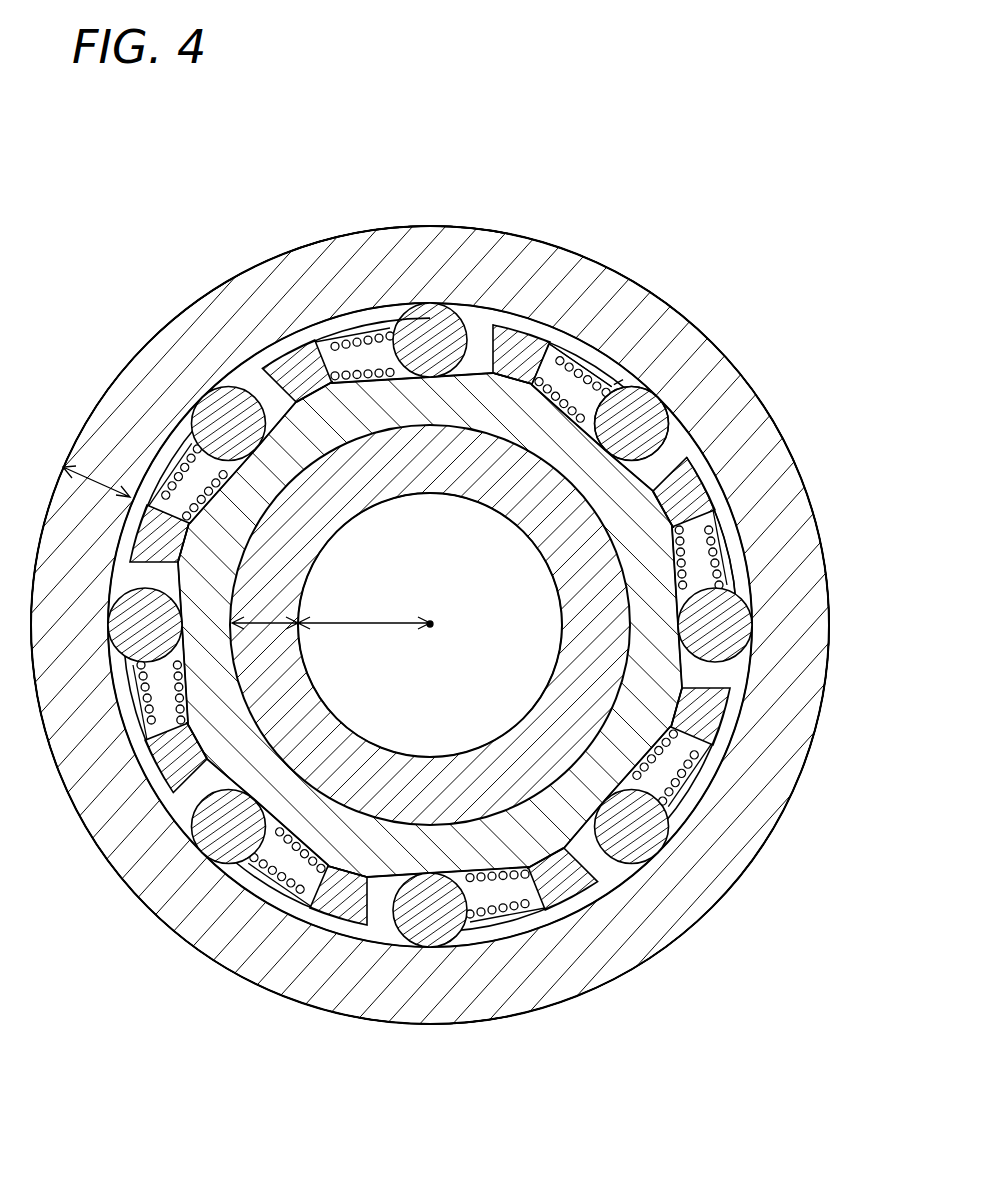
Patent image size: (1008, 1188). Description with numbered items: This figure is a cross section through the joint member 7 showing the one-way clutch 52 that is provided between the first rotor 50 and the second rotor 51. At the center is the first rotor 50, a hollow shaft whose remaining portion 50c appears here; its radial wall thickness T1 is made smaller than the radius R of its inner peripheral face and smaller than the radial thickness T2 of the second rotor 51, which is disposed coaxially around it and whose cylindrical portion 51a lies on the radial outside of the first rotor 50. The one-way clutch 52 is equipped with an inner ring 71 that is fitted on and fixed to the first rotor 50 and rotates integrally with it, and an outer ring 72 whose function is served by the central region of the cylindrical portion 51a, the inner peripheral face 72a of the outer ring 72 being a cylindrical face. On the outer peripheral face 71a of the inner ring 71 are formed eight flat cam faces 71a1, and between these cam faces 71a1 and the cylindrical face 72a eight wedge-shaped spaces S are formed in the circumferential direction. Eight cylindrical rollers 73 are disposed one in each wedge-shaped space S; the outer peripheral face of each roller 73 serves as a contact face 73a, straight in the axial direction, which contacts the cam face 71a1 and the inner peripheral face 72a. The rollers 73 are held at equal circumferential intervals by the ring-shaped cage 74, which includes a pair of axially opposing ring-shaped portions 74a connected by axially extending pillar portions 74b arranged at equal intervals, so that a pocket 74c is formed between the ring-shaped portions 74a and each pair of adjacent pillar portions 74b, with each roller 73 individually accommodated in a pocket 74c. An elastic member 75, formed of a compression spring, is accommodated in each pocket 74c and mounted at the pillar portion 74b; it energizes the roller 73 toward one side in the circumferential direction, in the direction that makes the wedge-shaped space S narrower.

The joint member 7 is at (781, 380).
The first rotor 50 is at (375, 712).
The remaining portion 50c is at (315, 523).
The second rotor 51 is at (331, 224).
The cylindrical portion 51a is at (785, 422).
The one-way clutch 52 is at (712, 484).
The inner ring 71 is at (591, 522).
The outer peripheral face 71a is at (598, 485).
The cam face 71a1 is at (513, 350).
The outer ring 72 is at (402, 218).
The inner peripheral face 72a is at (530, 328).
The roller 73 is at (638, 403).
The contact face 73a is at (685, 420).
The cage 74 is at (307, 327).
The ring-shaped portion 74a is at (727, 562).
The pillar portion 74b is at (498, 322).
The pocket 74c is at (725, 405).
The elastic member 75 is at (575, 353).
The wedge-shaped space S is at (619, 361).
The radius of the inner peripheral face R is at (364, 613).
The radial thickness of the first rotor T1 is at (265, 613).
The radial thickness of the second rotor T2 is at (96, 476).